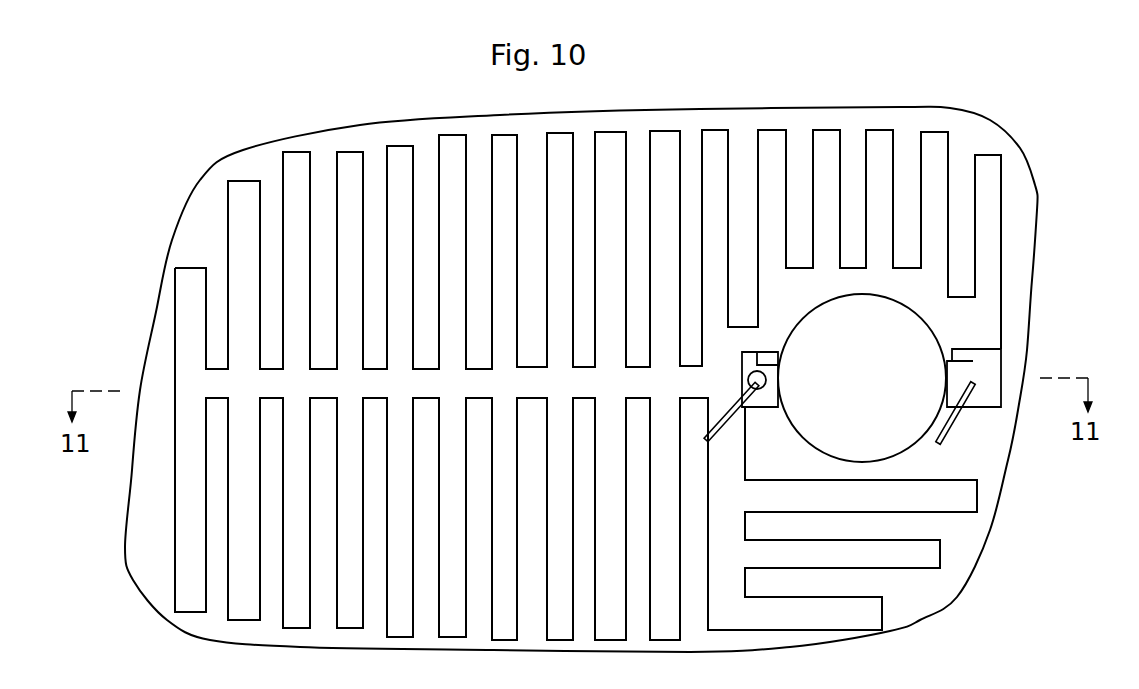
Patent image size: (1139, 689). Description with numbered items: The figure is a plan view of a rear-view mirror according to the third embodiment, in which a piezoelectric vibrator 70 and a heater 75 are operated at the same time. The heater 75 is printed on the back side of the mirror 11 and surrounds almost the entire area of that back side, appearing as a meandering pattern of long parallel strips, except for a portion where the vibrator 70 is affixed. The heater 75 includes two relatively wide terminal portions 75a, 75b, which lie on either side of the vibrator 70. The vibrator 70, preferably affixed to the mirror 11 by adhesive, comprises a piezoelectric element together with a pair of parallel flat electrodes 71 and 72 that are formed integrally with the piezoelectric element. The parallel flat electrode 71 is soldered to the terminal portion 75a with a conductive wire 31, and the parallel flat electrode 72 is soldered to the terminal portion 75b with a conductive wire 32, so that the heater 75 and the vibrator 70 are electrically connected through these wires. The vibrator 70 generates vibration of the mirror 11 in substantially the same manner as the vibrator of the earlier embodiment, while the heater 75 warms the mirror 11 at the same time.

The mirror 11 is at (233, 167).
The heater 75 is at (293, 152).
The terminal portion 75a is at (742, 353).
The terminal portion 75b is at (992, 395).
The piezoelectric vibrator 70 is at (937, 340).
The parallel flat electrode 71 is at (883, 337).
The parallel flat electrode 72 is at (767, 367).
The conductive wire 31 is at (721, 421).
The conductive wire 32 is at (952, 427).